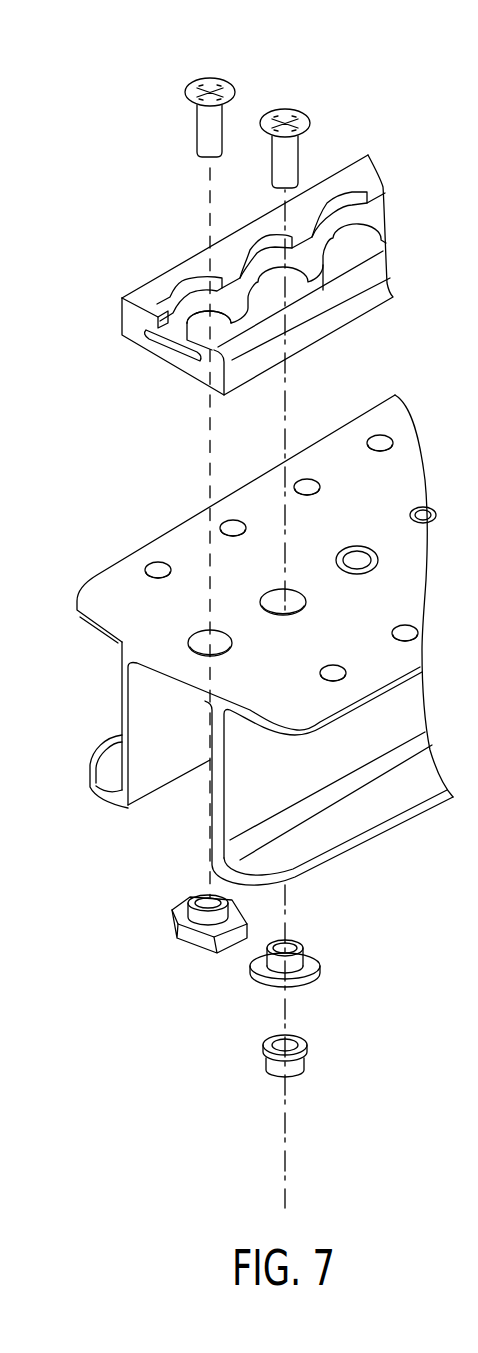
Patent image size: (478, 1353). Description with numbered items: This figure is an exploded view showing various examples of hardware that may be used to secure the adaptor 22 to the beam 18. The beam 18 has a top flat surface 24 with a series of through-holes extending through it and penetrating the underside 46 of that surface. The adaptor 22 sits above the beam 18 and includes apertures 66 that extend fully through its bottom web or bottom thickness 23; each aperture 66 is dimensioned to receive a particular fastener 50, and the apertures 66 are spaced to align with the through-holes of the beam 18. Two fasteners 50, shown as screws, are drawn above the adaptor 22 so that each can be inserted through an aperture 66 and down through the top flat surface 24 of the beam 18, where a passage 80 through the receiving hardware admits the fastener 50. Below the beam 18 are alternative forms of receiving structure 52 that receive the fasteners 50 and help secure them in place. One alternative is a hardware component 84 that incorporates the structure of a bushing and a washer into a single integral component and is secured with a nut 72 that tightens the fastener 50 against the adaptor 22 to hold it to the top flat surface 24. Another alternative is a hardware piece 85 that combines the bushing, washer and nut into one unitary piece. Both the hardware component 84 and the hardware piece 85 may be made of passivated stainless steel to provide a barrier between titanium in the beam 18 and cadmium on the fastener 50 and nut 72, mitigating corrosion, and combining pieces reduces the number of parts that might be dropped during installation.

The beam 18 is at (265, 622).
The adaptor 22 is at (360, 317).
The bottom web or bottom thickness 23 is at (180, 348).
The top flat surface 24 is at (120, 577).
The underside 46 is at (163, 678).
The fastener 50 is at (190, 88).
The receiving structure 52 is at (107, 992).
The aperture 66 is at (195, 310).
The nut 72 is at (306, 1045).
The passage 80 is at (200, 893).
The hardware component 84 is at (320, 962).
The hardware piece 85 is at (178, 896).